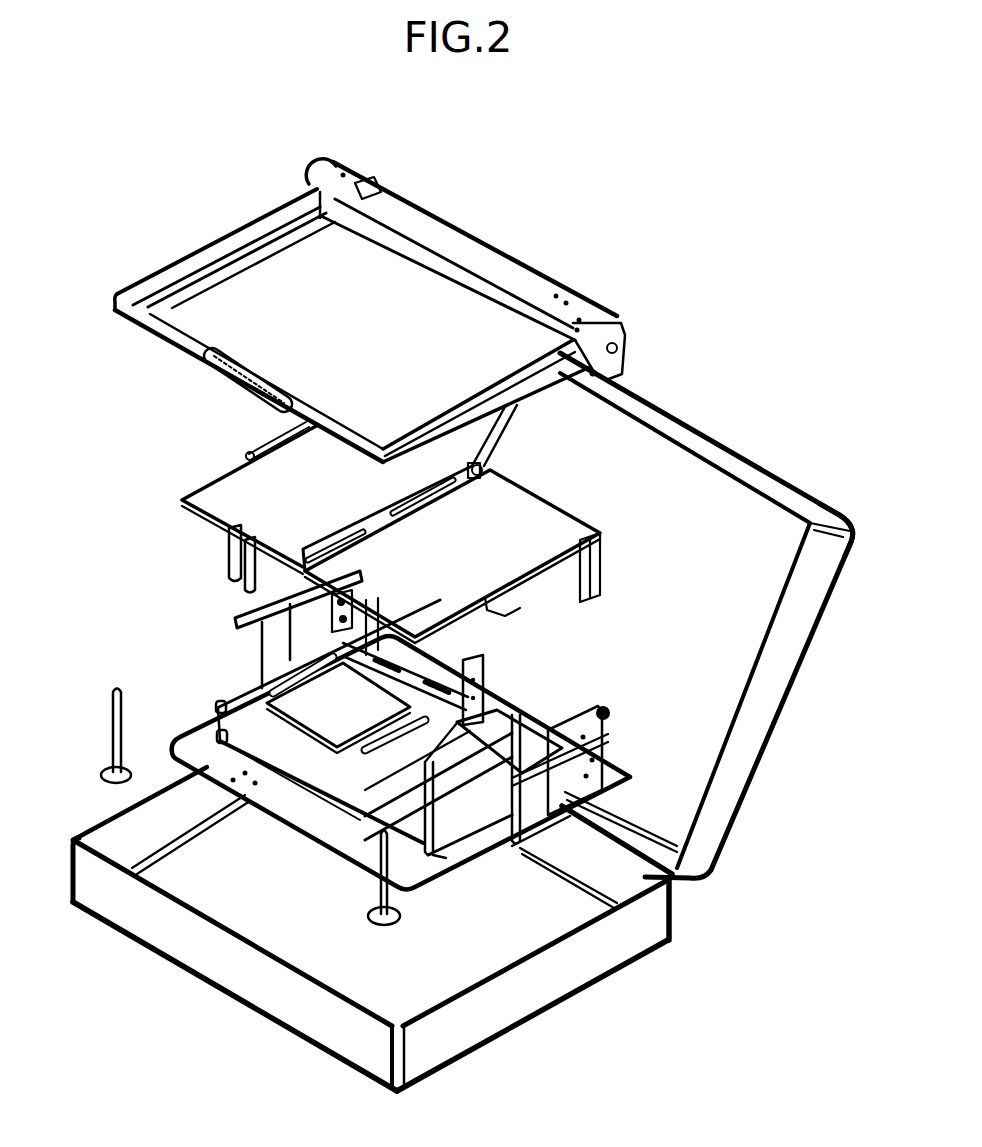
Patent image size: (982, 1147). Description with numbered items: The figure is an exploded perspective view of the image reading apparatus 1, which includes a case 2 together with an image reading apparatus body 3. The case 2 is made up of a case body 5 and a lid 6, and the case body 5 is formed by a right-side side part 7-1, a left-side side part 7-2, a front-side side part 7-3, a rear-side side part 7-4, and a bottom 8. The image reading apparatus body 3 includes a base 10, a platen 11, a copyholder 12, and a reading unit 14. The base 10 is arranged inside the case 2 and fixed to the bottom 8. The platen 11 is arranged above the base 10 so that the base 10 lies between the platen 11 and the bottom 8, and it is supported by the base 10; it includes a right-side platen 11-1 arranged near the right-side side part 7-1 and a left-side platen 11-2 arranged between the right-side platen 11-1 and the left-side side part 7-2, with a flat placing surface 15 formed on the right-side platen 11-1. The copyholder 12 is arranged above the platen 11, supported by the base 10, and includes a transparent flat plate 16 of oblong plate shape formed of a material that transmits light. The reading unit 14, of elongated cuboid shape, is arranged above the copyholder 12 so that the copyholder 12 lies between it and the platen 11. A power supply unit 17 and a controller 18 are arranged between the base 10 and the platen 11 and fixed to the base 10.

The image reading apparatus 1 is at (805, 153).
The case 2 is at (717, 674).
The image reading apparatus body 3 is at (108, 429).
The case body 5 is at (673, 922).
The lid 6 is at (820, 520).
The right-side side part 7-1 is at (547, 990).
The left-side side part 7-2 is at (107, 847).
The front-side side part 7-3 is at (267, 988).
The rear-side side part 7-4 is at (643, 877).
The bottom 8 is at (396, 1010).
The base 10 is at (247, 793).
The platen 11 is at (104, 513).
The right-side platen 11-1 is at (335, 607).
The left-side platen 11-2 is at (230, 528).
The copyholder 12 is at (222, 230).
The reading unit 14 is at (457, 243).
The flat placing surface 15 is at (463, 547).
The transparent flat plate 16 is at (325, 317).
The power supply unit 17 is at (497, 743).
The controller 18 is at (312, 718).